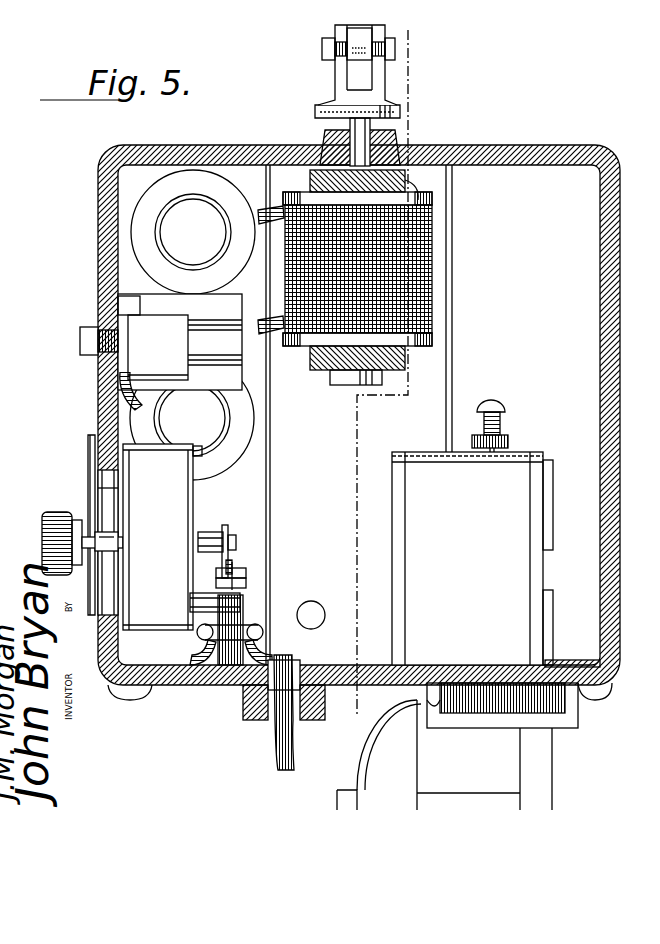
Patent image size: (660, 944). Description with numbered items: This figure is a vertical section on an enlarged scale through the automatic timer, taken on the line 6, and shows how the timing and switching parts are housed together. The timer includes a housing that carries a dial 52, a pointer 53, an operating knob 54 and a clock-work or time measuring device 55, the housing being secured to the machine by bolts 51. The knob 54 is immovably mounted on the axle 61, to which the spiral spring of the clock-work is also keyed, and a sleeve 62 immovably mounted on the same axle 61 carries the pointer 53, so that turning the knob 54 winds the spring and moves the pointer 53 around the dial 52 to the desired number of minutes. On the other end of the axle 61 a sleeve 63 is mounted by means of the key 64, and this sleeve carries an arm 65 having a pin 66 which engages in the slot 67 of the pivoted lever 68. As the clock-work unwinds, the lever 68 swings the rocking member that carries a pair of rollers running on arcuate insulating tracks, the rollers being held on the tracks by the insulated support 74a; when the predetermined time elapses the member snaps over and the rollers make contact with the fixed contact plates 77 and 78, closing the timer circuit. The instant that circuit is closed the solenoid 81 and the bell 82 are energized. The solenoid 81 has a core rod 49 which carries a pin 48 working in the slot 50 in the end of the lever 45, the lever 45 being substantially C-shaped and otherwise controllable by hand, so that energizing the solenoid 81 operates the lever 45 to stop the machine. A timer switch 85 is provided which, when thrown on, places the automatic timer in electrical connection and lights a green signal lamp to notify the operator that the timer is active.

The section line 6 is at (435, 70).
The lever 45 is at (347, 60).
The pin 48 is at (322, 50).
The core rod 49 is at (345, 128).
The slot 50 is at (97, 218).
The bolt 51 is at (313, 612).
The dial 52 is at (98, 627).
The pointer 53 is at (88, 462).
The operating knob 54 is at (42, 527).
The clock-work 55 is at (180, 520).
The axle 61 is at (236, 545).
The sleeve 62 is at (112, 548).
The sleeve 63 is at (227, 533).
The key 64 is at (198, 540).
The arm 65 is at (215, 565).
The pin 66 is at (240, 580).
The slot 67 is at (233, 570).
The lever 68 is at (240, 593).
The insulated support 74a is at (228, 668).
The contact plate 77 is at (243, 628).
The contact plate 78 is at (213, 640).
The solenoid 81 is at (432, 290).
The bell 82 is at (457, 605).
The timer switch 85 is at (80, 337).